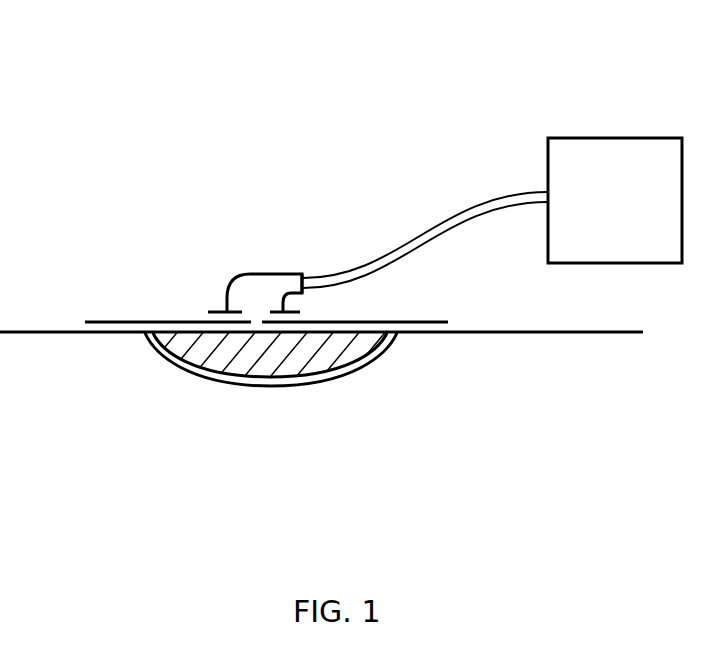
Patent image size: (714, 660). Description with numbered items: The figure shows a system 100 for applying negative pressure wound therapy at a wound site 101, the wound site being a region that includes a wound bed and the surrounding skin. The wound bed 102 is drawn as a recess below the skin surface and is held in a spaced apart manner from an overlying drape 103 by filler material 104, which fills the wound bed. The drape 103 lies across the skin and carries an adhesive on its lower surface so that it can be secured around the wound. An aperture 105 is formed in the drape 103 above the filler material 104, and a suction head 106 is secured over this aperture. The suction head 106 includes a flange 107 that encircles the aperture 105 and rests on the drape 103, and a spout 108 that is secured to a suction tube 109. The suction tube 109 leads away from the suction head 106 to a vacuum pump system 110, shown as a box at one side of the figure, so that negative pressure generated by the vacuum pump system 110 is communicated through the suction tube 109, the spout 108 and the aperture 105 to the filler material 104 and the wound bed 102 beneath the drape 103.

The system 100 is at (142, 69).
The wound site 101 is at (220, 481).
The wound bed 102 is at (357, 365).
The drape 103 is at (102, 321).
The filler material 104 is at (217, 360).
The aperture 105 is at (257, 324).
The suction head 106 is at (208, 237).
The flange 107 is at (215, 311).
The spout 108 is at (291, 274).
The suction tube 109 is at (447, 222).
The vacuum pump system 110 is at (637, 214).